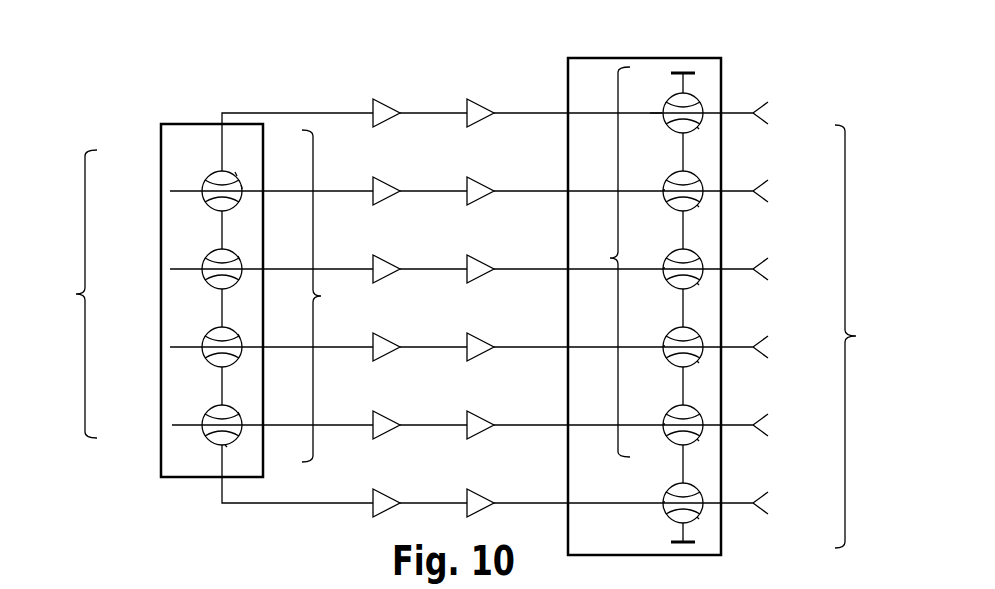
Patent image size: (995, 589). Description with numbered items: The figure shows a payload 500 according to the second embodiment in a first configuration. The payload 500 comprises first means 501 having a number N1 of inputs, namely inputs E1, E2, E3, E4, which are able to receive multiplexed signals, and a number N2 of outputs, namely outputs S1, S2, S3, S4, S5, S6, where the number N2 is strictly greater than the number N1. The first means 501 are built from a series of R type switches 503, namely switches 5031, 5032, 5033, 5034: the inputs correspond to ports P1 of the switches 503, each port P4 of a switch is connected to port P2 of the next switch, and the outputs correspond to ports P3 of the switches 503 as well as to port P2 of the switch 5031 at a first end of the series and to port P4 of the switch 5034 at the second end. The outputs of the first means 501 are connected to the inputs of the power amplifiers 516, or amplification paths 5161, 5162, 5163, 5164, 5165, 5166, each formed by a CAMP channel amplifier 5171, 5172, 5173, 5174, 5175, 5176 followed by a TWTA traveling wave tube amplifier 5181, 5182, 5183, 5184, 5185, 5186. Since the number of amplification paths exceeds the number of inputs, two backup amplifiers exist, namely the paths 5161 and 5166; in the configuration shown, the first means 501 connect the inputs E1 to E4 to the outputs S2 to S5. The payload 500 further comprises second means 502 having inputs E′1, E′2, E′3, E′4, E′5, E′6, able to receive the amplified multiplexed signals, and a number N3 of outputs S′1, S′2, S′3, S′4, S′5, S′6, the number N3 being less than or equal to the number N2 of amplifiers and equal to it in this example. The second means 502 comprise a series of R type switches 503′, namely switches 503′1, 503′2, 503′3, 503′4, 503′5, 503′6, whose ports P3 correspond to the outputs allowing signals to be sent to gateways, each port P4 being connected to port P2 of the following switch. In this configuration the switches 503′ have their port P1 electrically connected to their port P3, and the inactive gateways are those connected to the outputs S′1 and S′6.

The payload 500 is at (293, 50).
The first means 501 is at (160, 139).
The second means 502 is at (722, 80).
The R type switches 503 is at (194, 254).
The R type switch 5031 is at (220, 170).
The R type switch 5032 is at (208, 255).
The R type switch 5033 is at (206, 337).
The R type switch 5034 is at (208, 412).
The R type switches 503′ is at (729, 271).
The R type switch 503′1 is at (697, 99).
The R type switch 503′2 is at (699, 177).
The R type switch 503′3 is at (699, 255).
The R type switch 503′4 is at (699, 333).
The R type switch 503′5 is at (699, 411).
The R type switch 503′6 is at (699, 489).
The power amplifiers 516 is at (570, 277).
The amplification path 5161 is at (570, 82).
The amplification path 5162 is at (570, 160).
The amplification path 5163 is at (570, 238).
The amplification path 5164 is at (570, 316).
The amplification path 5165 is at (570, 394).
The amplification path 5166 is at (570, 472).
The CAMP channel amplifier 5171 is at (380, 100).
The CAMP channel amplifier 5172 is at (380, 178).
The CAMP channel amplifier 5173 is at (380, 256).
The CAMP channel amplifier 5174 is at (380, 334).
The CAMP channel amplifier 5175 is at (380, 412).
The CAMP channel amplifier 5176 is at (380, 490).
The TWTA traveling wave tube amplifier 5181 is at (617, 103).
The TWTA traveling wave tube amplifier 5182 is at (617, 181).
The TWTA traveling wave tube amplifier 5183 is at (617, 259).
The TWTA traveling wave tube amplifier 5184 is at (617, 337).
The TWTA traveling wave tube amplifier 5185 is at (617, 415).
The TWTA traveling wave tube amplifier 5186 is at (617, 493).
The input E1 is at (204, 186).
The input E2 is at (204, 268).
The input E3 is at (204, 350).
The input E4 is at (204, 426).
The input E′1 is at (650, 113).
The input E′2 is at (663, 190).
The input E′3 is at (663, 268).
The input E′4 is at (663, 346).
The input E′5 is at (663, 424).
The input E′6 is at (663, 502).
The output S1 is at (235, 172).
The output S2 is at (241, 185).
The output S3 is at (238, 256).
The output S4 is at (238, 334).
The output S5 is at (238, 412).
The output S6 is at (225, 445).
The output S′1 is at (697, 127).
The output S′2 is at (697, 205).
The output S′3 is at (697, 283).
The output S′4 is at (697, 361).
The output S′5 is at (697, 439).
The output S′6 is at (697, 517).
The number of inputs N1 is at (72, 294).
The number of outputs N2 is at (466, 264).
The number of outputs N3 is at (861, 336).